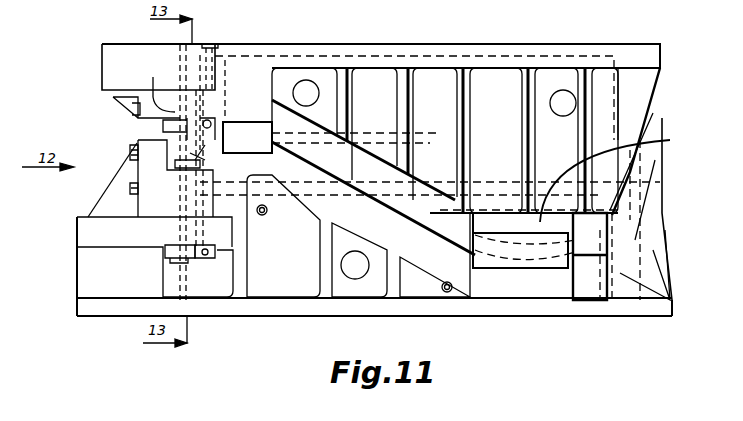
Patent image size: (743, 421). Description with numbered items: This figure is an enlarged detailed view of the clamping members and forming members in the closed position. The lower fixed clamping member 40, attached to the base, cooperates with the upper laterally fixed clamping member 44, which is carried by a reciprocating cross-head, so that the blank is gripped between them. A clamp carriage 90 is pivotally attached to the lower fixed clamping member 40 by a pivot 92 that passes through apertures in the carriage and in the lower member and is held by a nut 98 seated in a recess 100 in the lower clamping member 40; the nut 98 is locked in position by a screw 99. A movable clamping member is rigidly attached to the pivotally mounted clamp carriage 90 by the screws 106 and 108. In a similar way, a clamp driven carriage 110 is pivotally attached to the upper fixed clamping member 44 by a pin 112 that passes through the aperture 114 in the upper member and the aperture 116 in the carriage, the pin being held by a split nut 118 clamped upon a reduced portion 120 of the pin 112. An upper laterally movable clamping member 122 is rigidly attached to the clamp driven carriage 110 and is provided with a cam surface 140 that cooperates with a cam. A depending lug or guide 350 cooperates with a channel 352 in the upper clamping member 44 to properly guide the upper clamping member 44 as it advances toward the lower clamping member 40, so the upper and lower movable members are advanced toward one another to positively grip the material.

The lower fixed clamping member 40 is at (295, 280).
The upper laterally fixed clamping member 44 is at (490, 78).
The clamp carriage 90 is at (113, 166).
The pivot 92 is at (186, 156).
The nut 98 is at (172, 255).
The screw 99 is at (205, 260).
The recess 100 is at (176, 250).
The screw 106 is at (130, 148).
The screw 108 is at (130, 193).
The clamp driven carriage 110 is at (113, 99).
The pin 112 is at (208, 48).
The aperture 114 is at (210, 72).
The aperture 116 is at (158, 82).
The nut 118 is at (163, 127).
The reduced portion 120 is at (214, 122).
The upper laterally movable clamping member 122 is at (127, 152).
The cam surface 140 is at (201, 153).
The depending lug or guide 350 is at (535, 233).
The channel 352 is at (643, 140).